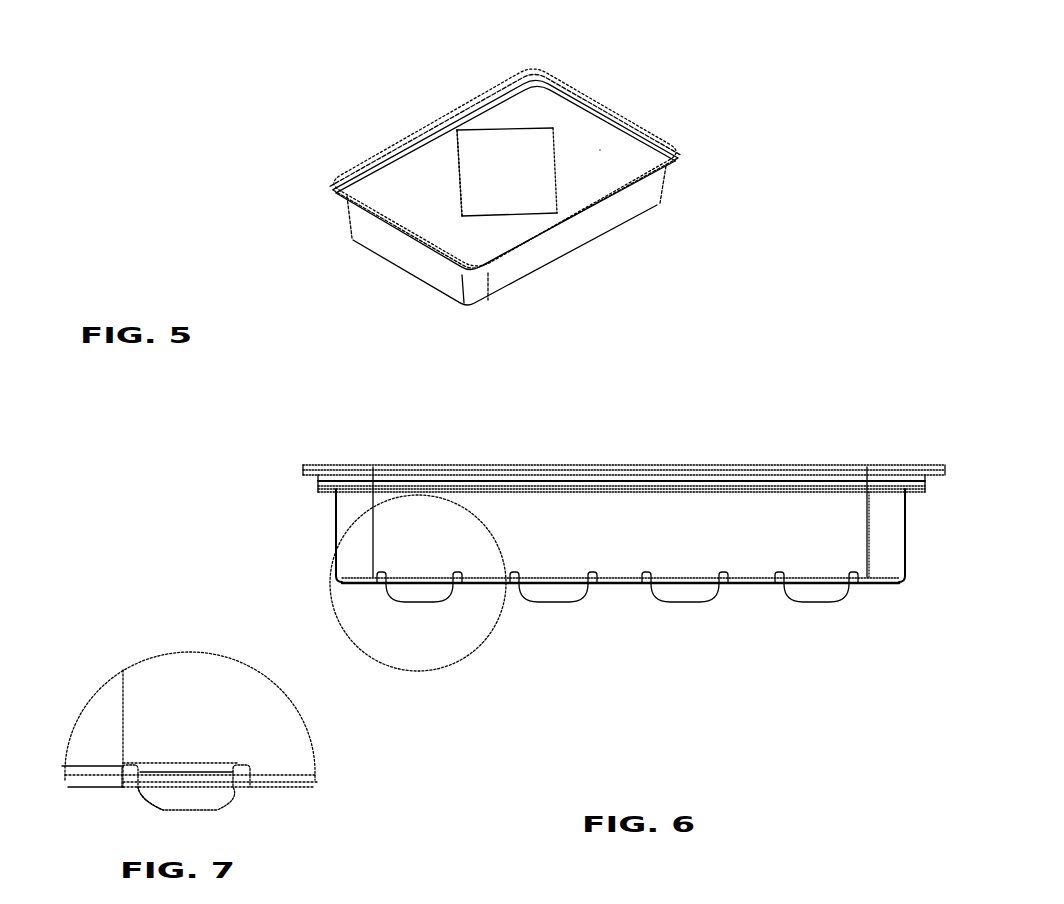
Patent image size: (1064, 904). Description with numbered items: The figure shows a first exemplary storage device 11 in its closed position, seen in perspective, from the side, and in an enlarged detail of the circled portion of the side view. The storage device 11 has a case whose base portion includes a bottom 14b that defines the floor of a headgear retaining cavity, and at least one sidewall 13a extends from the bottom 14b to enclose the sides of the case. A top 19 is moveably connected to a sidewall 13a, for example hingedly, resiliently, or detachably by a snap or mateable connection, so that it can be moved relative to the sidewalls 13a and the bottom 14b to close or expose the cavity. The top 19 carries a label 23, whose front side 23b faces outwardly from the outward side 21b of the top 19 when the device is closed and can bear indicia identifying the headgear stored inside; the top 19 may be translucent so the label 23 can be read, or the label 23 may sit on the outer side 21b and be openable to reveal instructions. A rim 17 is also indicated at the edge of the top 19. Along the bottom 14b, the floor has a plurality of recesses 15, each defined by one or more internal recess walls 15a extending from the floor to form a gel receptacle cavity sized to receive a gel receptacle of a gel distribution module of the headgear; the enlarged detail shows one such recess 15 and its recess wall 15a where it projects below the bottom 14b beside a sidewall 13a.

In FIG. 5, the storage device 11 is at (315, 154).
In FIG. 6, the storage device 11 is at (291, 526).
In FIG. 5, the sidewall 13a is at (506, 275).
In FIG. 6, the sidewall 13a is at (838, 543).
In FIG. 7, the sidewall 13a is at (203, 713).
In FIG. 6, the bottom 14b is at (614, 620).
In FIG. 6, the recess 15 is at (617, 645).
In FIG. 7, the recess 15 is at (197, 797).
In FIG. 7, the internal recess wall 15a is at (183, 785).
In FIG. 5, the rim 17 is at (690, 163).
In FIG. 5, the top 19 is at (537, 113).
In FIG. 6, the top 19 is at (613, 464).
In FIG. 5, the outward side of the top 21b is at (627, 158).
In FIG. 5, the label 23 is at (497, 167).
In FIG. 5, the front side of the label 23b is at (497, 192).